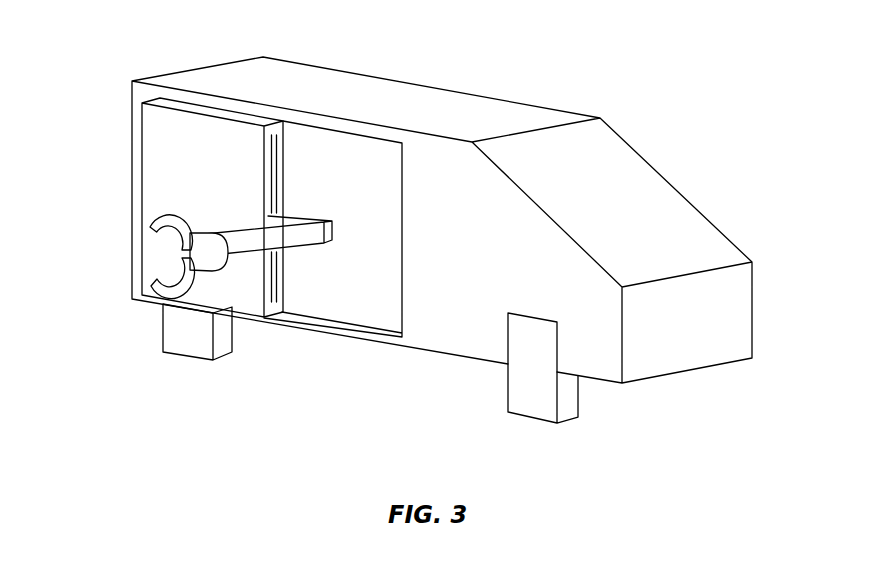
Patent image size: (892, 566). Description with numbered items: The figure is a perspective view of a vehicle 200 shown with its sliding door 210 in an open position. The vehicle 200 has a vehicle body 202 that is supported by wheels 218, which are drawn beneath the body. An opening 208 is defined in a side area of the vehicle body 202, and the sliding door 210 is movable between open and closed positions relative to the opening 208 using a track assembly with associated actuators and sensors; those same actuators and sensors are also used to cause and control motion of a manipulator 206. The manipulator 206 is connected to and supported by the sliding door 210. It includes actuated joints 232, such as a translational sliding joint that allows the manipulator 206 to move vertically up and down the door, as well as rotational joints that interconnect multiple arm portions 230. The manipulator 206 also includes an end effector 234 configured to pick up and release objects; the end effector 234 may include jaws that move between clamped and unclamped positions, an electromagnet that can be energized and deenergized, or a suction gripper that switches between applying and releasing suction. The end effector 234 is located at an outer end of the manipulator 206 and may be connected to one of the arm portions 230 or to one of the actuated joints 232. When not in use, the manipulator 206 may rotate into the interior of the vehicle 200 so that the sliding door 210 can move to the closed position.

The vehicle 200 is at (386, 235).
The vehicle body 202 is at (624, 134).
The manipulator 206 is at (121, 249).
The opening 208 is at (403, 227).
The sliding door 210 is at (142, 173).
The wheels 218 is at (508, 400).
The arm portions 230 is at (299, 217).
The actuated joints 232 is at (278, 167).
The end effector 234 is at (178, 220).